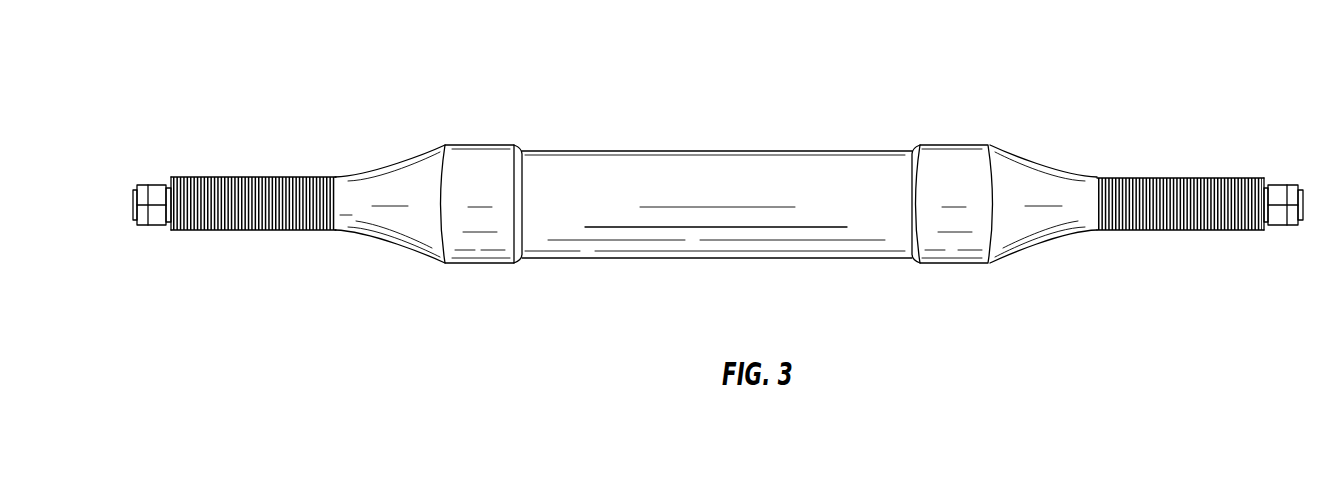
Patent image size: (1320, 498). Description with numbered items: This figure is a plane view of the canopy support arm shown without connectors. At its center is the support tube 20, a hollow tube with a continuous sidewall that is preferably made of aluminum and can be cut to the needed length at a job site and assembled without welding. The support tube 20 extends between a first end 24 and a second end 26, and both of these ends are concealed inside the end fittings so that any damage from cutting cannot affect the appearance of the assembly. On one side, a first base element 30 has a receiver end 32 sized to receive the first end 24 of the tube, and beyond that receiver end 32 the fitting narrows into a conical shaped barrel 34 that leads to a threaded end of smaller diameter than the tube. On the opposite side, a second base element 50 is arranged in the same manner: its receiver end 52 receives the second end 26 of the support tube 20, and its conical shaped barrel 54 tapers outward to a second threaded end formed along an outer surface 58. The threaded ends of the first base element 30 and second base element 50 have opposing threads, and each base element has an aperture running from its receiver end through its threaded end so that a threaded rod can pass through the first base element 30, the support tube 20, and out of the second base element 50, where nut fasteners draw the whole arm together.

The support tube 20 is at (768, 110).
The first end 24 is at (884, 147).
The second end 26 is at (536, 149).
The first base element 30 is at (1017, 137).
The receiver end 32 is at (940, 142).
The conical shaped barrel 34 is at (1073, 165).
The second base element 50 is at (363, 68).
The receiver end 52 is at (480, 141).
The conical shaped barrel 54 is at (387, 158).
The outer surface 58 is at (243, 148).